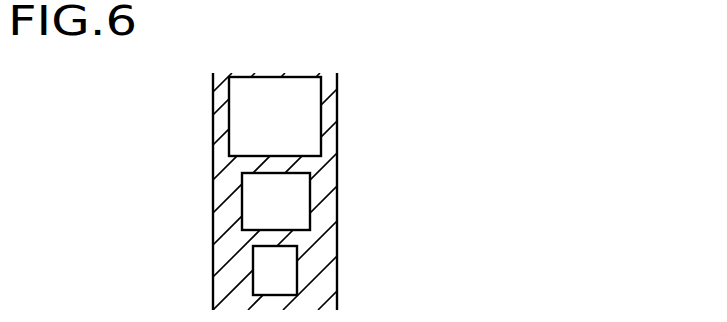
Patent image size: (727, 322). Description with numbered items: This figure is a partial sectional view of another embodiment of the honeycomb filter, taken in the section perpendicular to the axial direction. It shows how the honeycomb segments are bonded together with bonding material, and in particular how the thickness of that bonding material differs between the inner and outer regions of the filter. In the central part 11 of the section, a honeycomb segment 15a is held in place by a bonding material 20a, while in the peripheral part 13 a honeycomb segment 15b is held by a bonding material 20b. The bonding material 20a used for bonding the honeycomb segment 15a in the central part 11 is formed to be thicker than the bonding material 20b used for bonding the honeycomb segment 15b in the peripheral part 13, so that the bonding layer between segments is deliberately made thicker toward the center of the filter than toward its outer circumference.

The central part 11 is at (293, 255).
The peripheral part 13 is at (307, 128).
The honeycomb segment 15a is at (293, 278).
The honeycomb segment 15b is at (313, 91).
The bonding material 20a is at (224, 282).
The bonding material 20b is at (220, 129).